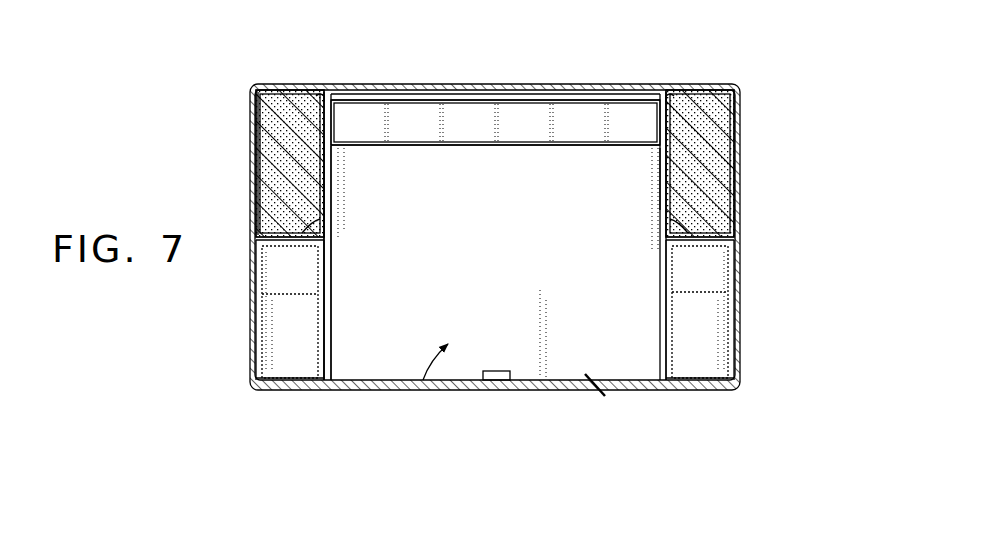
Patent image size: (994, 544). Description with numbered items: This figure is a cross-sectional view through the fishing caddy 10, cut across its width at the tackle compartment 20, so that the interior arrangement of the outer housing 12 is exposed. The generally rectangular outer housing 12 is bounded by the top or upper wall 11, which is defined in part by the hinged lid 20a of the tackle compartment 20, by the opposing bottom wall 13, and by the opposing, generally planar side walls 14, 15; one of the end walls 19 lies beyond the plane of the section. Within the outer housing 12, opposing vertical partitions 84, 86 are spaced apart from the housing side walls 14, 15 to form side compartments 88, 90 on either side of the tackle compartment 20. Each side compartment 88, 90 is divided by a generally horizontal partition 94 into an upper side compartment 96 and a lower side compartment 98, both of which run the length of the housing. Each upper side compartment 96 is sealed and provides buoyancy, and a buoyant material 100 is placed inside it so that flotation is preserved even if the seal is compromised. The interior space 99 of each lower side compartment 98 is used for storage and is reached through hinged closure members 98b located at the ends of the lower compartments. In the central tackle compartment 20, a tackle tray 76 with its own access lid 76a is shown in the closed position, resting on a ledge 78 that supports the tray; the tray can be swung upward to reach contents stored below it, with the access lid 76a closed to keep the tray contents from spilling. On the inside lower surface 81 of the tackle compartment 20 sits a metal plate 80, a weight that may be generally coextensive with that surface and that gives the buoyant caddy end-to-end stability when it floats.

The fishing caddy 10 is at (207, 50).
The top or upper wall 11 is at (276, 86).
The outer housing 12 is at (686, 393).
The bottom wall 13 is at (369, 394).
The side wall 14 is at (746, 162).
The side wall 15 is at (254, 110).
The end wall 19 is at (422, 393).
The tackle compartment 20 is at (505, 231).
The hinged lid 20a is at (574, 90).
The tackle tray 76 is at (406, 102).
The access lid 76a is at (482, 100).
The ledge 78 is at (333, 150).
The metal plate 80 is at (536, 394).
The inside lower surface 81 is at (600, 394).
The vertical partition 84 is at (662, 198).
The vertical partition 86 is at (333, 274).
The side compartment 88 is at (742, 96).
The side compartment 90 is at (256, 148).
The horizontal partition 94 is at (306, 226).
The upper side compartment 96 is at (258, 190).
The lower side compartment 98 is at (250, 300).
The hinged closure member 98b is at (262, 354).
The interior space 99 is at (252, 378).
The buoyant material 100 is at (306, 96).